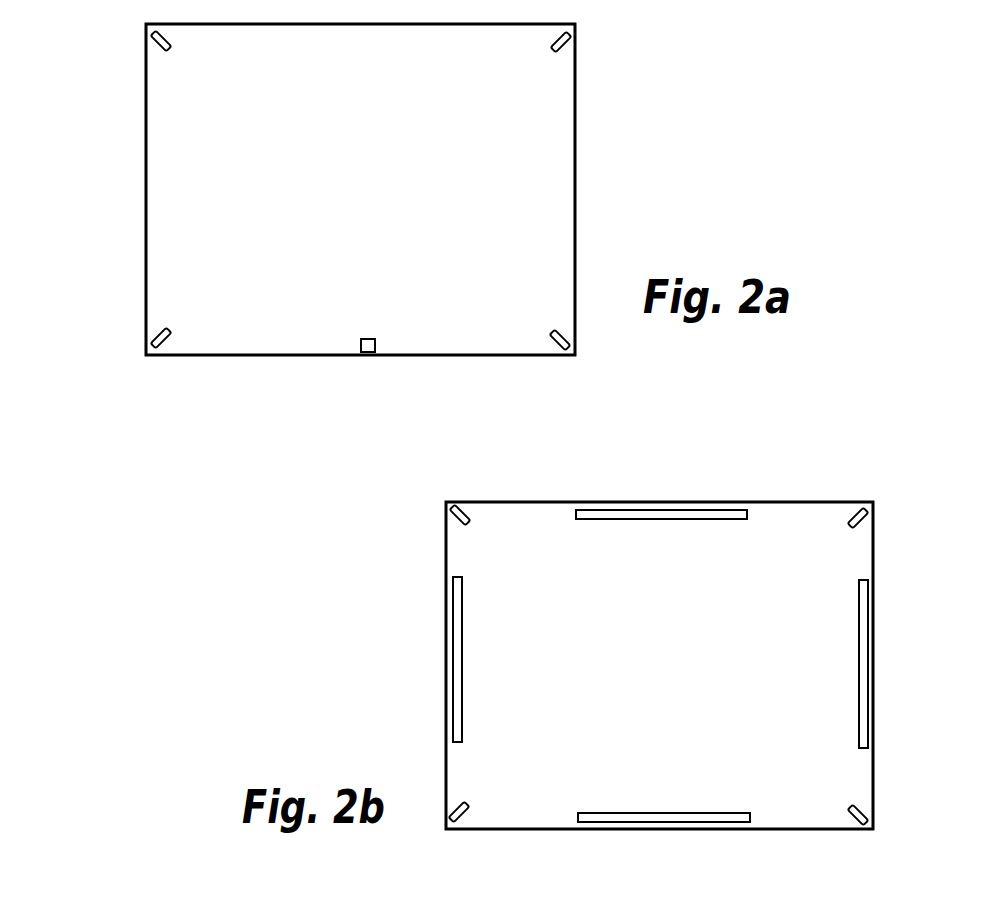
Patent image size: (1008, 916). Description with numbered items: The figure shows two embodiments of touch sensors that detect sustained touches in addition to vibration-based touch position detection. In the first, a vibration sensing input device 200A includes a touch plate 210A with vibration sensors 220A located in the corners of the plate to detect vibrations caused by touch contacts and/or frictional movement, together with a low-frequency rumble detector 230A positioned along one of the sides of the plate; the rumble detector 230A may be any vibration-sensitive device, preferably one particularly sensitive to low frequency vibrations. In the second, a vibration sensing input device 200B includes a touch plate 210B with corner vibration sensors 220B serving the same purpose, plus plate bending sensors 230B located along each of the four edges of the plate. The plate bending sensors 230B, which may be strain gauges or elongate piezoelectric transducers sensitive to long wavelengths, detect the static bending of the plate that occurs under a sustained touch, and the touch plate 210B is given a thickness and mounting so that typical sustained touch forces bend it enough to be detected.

In FIG. 2A, the vibration sensing input device 200A is at (666, 60).
In FIG. 2A, the touch plate 210A is at (573, 181).
In FIG. 2A, the vibration sensors 220A is at (158, 47).
In FIG. 2A, the low-frequency rumble detector 230A is at (369, 352).
In FIG. 2B, the vibration sensing input device 200B is at (385, 537).
In FIG. 2B, the touch plate 210B is at (778, 510).
In FIG. 2B, the vibration sensors 220B is at (460, 521).
In FIG. 2B, the plate bending sensors 230B is at (462, 725).